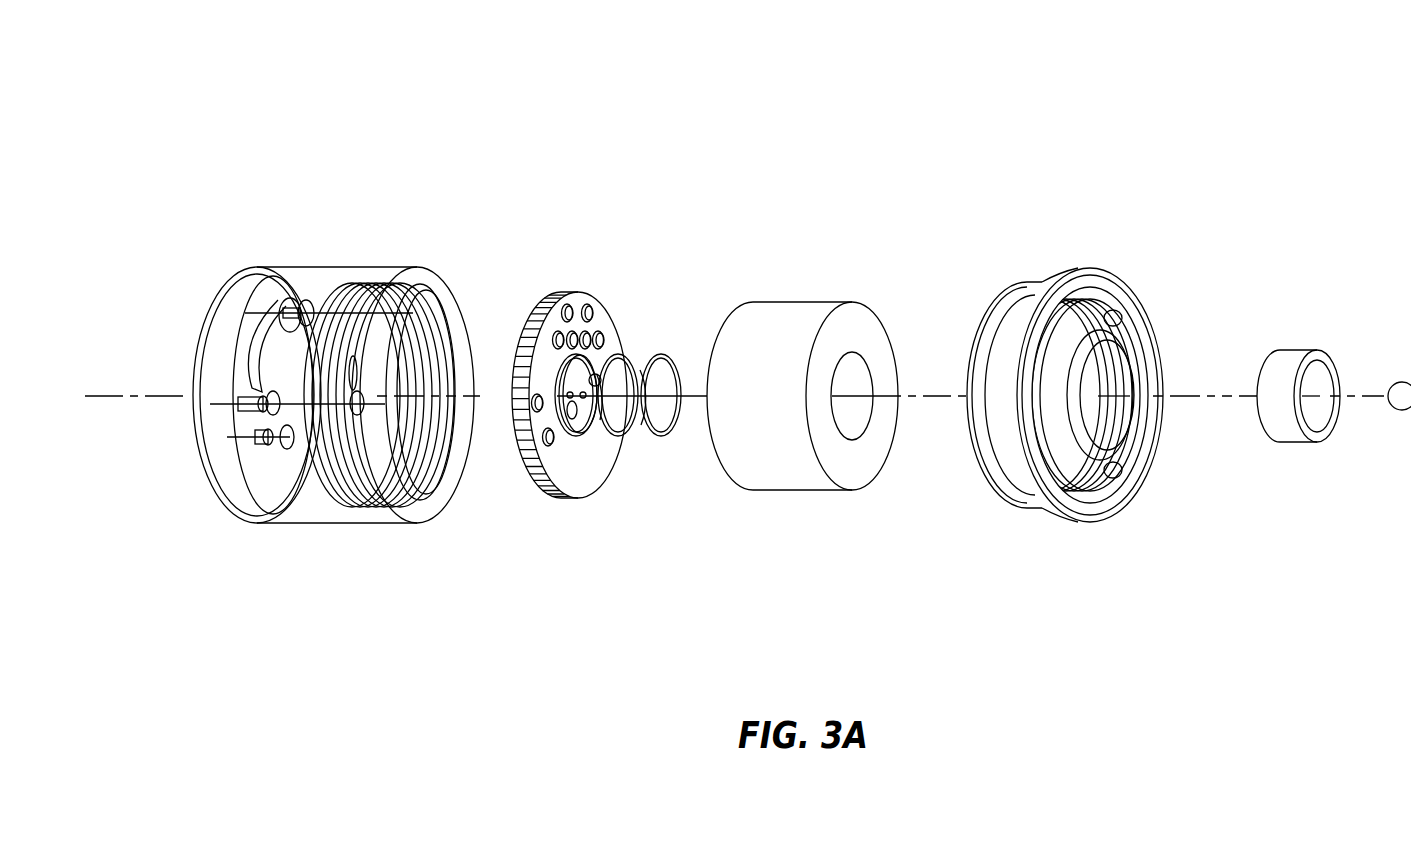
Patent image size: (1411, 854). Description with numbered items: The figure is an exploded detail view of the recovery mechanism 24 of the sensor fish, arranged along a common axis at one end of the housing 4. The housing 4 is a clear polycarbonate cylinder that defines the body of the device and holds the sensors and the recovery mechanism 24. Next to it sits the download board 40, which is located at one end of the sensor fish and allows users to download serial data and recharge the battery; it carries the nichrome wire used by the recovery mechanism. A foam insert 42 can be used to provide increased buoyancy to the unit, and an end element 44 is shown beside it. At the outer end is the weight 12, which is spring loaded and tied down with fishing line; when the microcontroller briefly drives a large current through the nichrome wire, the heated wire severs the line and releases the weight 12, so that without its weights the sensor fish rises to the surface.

The recovery mechanism 24 is at (727, 186).
The housing 4 is at (332, 523).
The download board 40 is at (578, 497).
The foam insert 42 is at (797, 490).
The threaded retaining ring 44 is at (1050, 510).
The weight 12 is at (1300, 350).